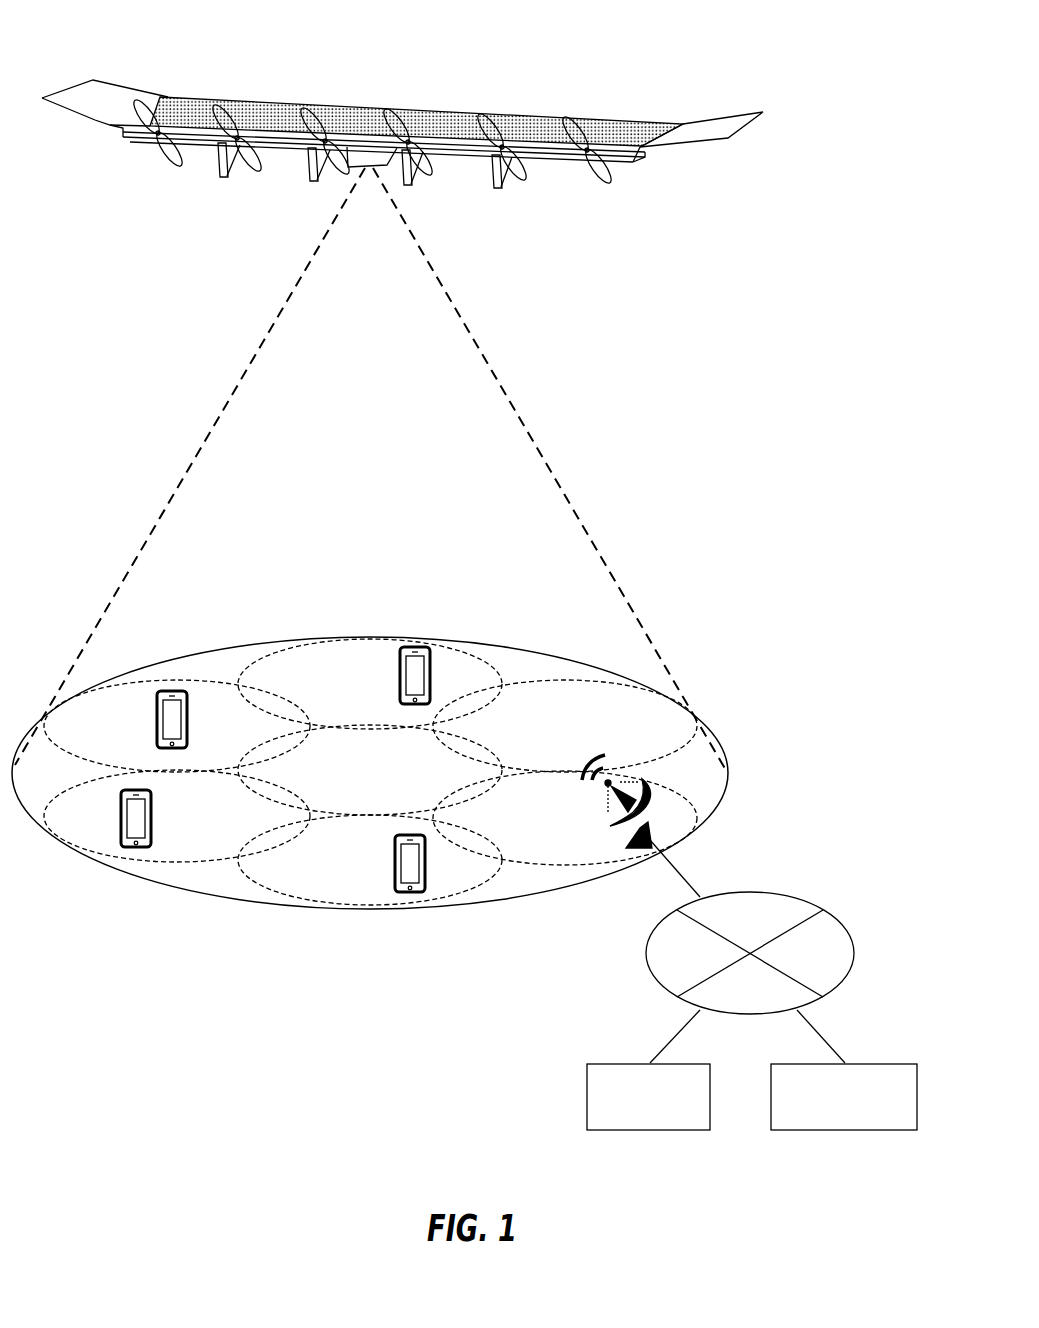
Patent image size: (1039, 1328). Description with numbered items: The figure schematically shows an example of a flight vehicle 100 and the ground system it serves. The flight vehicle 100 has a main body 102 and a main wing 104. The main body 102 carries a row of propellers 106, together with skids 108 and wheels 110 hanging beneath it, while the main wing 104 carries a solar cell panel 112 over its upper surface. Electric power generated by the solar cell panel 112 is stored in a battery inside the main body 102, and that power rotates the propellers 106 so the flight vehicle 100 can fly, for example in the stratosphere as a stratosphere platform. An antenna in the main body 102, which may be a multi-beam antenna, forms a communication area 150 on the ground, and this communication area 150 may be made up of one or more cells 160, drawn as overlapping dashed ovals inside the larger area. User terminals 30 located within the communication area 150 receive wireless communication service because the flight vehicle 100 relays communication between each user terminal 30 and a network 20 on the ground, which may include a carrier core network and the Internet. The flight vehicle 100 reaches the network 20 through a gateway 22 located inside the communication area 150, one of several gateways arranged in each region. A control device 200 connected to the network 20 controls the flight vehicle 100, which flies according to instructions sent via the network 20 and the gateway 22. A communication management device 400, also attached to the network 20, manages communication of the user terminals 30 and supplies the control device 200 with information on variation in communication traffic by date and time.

The flight vehicle 100 is at (70, 33).
The main body 102 is at (363, 148).
The main wing 104 is at (108, 90).
The propellers 106 is at (163, 148).
The skids 108 is at (214, 165).
The wheels 110 is at (229, 176).
The solar cell panel 112 is at (195, 100).
The communication area 150 is at (503, 634).
The cells 160 is at (372, 642).
The user terminals 30 is at (190, 720).
The gateway 22 is at (604, 820).
The network 20 is at (793, 895).
The control device 200 is at (706, 1056).
The communication management device 400 is at (913, 1056).